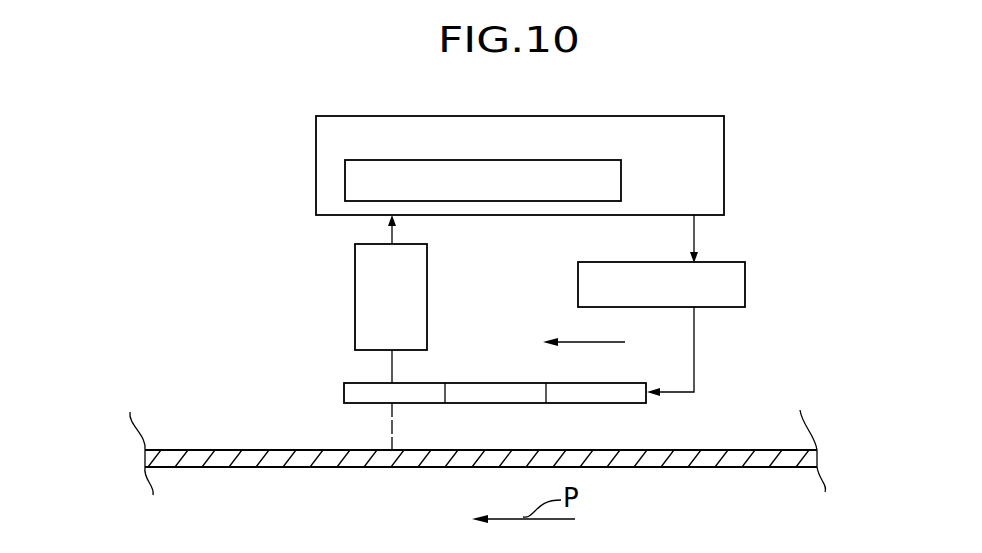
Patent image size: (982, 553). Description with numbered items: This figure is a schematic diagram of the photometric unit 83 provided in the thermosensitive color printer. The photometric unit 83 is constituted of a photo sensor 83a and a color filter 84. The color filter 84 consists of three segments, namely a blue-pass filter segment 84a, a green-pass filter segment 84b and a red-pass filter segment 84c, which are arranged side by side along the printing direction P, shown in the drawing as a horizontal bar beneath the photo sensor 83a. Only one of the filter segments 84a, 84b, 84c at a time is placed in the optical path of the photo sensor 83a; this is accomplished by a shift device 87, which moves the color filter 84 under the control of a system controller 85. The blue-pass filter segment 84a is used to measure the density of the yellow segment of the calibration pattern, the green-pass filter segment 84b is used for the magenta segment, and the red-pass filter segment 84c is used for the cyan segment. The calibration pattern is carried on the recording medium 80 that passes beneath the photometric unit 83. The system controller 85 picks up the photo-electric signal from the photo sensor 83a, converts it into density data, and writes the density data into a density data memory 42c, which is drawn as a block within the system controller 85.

The system controller 85 is at (724, 135).
The density data memory 42c is at (345, 180).
The photometric unit 83 is at (278, 253).
The photo sensor 83a is at (355, 283).
The color filter 84 is at (344, 393).
The blue-pass filter segment 84a is at (405, 403).
The green-pass filter segment 84b is at (497, 403).
The red-pass filter segment 84c is at (600, 403).
The shift device 87 is at (745, 287).
The recording medium / transfer belt 80 is at (733, 450).